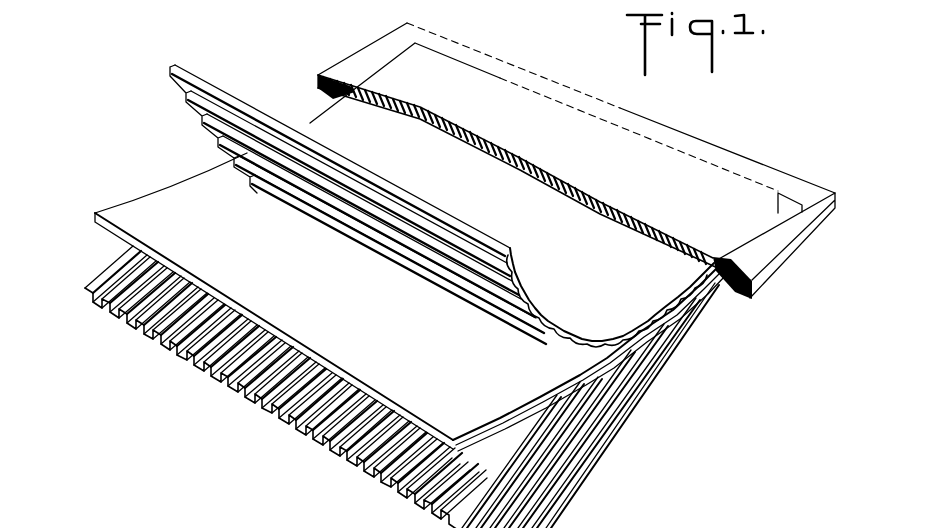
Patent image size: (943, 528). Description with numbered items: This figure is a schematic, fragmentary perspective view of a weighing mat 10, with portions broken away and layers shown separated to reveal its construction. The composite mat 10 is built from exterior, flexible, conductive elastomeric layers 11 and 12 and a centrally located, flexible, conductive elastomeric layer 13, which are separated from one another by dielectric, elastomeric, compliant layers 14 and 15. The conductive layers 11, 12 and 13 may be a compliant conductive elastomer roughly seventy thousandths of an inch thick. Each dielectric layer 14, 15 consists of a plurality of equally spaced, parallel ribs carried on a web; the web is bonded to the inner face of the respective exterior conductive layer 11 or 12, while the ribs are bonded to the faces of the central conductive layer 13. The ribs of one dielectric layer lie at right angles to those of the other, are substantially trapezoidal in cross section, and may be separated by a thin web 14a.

The weighing mat 10 is at (788, 282).
The exterior conductive elastomeric layer 11 is at (632, 228).
The exterior conductive elastomeric layer 12 is at (716, 290).
The central conductive elastomeric layer 13 is at (557, 398).
The dielectric elastomeric compliant layer 14 is at (543, 328).
The thin web 14a is at (620, 334).
The dielectric elastomeric compliant layer 15 is at (483, 501).